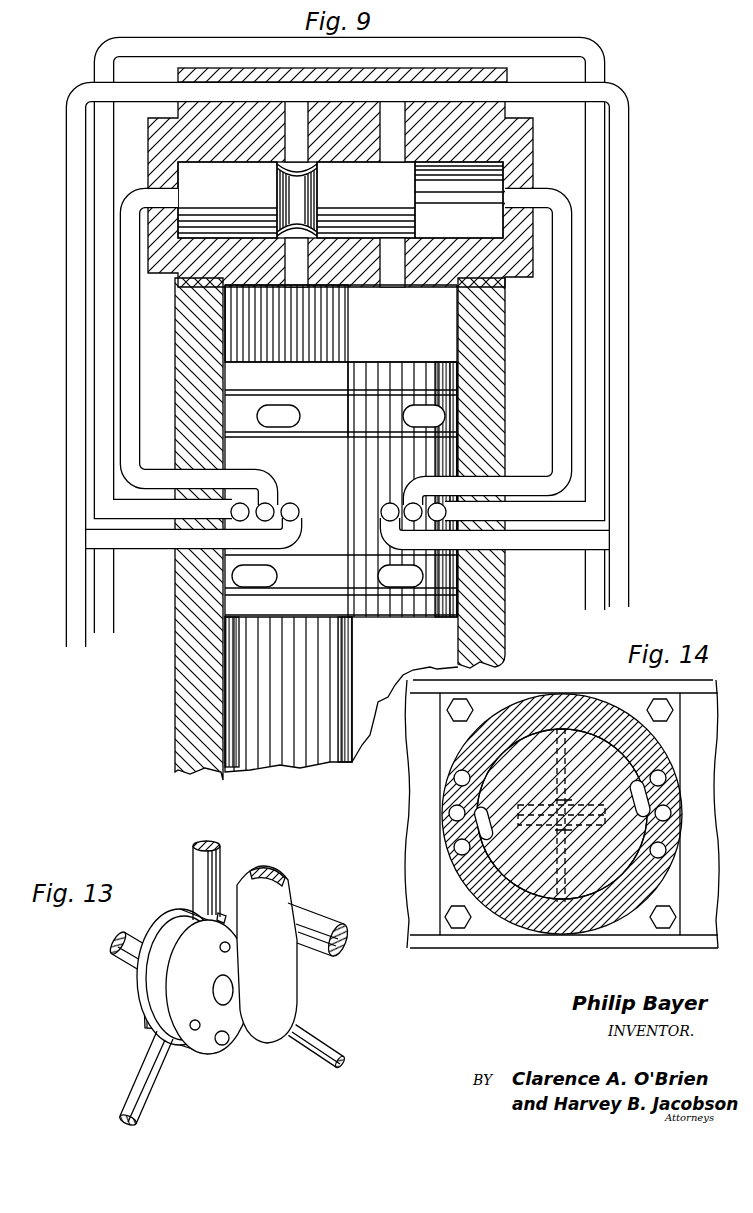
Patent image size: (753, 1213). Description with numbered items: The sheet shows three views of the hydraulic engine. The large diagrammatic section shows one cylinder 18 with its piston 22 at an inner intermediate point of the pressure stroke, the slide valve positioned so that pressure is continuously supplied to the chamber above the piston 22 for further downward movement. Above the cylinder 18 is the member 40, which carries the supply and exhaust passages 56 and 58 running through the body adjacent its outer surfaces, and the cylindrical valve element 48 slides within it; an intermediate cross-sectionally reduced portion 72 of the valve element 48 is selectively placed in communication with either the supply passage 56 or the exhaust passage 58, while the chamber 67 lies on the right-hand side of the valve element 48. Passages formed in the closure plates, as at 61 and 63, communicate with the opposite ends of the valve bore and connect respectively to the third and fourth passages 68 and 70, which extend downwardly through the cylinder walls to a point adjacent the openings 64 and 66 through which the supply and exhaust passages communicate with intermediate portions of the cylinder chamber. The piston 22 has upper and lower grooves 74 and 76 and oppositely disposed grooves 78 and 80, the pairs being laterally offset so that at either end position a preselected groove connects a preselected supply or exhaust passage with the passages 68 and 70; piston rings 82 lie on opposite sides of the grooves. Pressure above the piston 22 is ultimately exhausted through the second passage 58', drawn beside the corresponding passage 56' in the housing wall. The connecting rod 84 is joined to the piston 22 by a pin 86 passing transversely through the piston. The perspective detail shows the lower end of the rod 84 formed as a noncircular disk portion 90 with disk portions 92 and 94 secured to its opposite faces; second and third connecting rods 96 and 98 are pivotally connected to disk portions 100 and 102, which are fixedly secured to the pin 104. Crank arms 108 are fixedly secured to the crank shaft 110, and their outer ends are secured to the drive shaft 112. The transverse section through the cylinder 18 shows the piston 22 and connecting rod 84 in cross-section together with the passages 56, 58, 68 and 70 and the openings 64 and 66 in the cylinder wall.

In FIG. 9, the cylinder 18 is at (500, 593).
In FIG. 14, the cylinder 18 is at (580, 700).
In FIG. 9, the piston 22 is at (315, 371).
In FIG. 14, the piston 22 is at (544, 732).
In FIG. 9, the member 40 is at (506, 82).
In FIG. 9, the valve element 48 is at (340, 200).
In FIG. 9, the supply passage 56 is at (323, 369).
In FIG. 14, the supply passage 56 is at (559, 859).
In FIG. 9, the passage 56' is at (320, 193).
In FIG. 9, the exhaust passage 58 is at (311, 340).
In FIG. 14, the exhaust passage 58 is at (558, 773).
In FIG. 9, the second passage 58' is at (406, 193).
In FIG. 9, the third passage 61 is at (132, 443).
In FIG. 9, the fourth passage 63 is at (560, 333).
In FIG. 14, the opening 64 is at (560, 908).
In FIG. 14, the opening 66 is at (487, 777).
In FIG. 9, the chamber 67 is at (459, 200).
In FIG. 14, the third passage 68 is at (449, 814).
In FIG. 14, the fourth passage 70 is at (671, 813).
In FIG. 9, the cross-sectionally reduced portion 72 is at (284, 184).
In FIG. 9, the upper groove 74 is at (301, 416).
In FIG. 14, the upper groove 74 is at (489, 840).
In FIG. 9, the lower groove 76 is at (278, 576).
In FIG. 9, the oppositely disposed groove 78 is at (402, 416).
In FIG. 14, the oppositely disposed groove 78 is at (633, 811).
In FIG. 9, the oppositely disposed groove 80 is at (377, 576).
In FIG. 9, the piston rings 82 is at (347, 395).
In FIG. 9, the connecting rod 84 is at (349, 664).
In FIG. 14, the connecting rod 84 is at (588, 798).
In FIG. 13, the connecting rod 84 is at (200, 865).
In FIG. 14, the pin 86 is at (548, 776).
In FIG. 13, the noncircular disk portion 90 is at (172, 940).
In FIG. 13, the disk portion 92 is at (223, 916).
In FIG. 13, the disk portion 94 is at (183, 920).
In FIG. 13, the second connecting rod 96 is at (137, 1080).
In FIG. 13, the third connecting rod 98 is at (315, 1030).
In FIG. 13, the disk portion 100 is at (147, 982).
In FIG. 13, the disk portion 102 is at (198, 1044).
In FIG. 13, the pin 104 is at (221, 1045).
In FIG. 13, the crank arms 108 is at (290, 982).
In FIG. 13, the crank shaft 110 is at (229, 993).
In FIG. 13, the drive shaft 112 is at (317, 912).